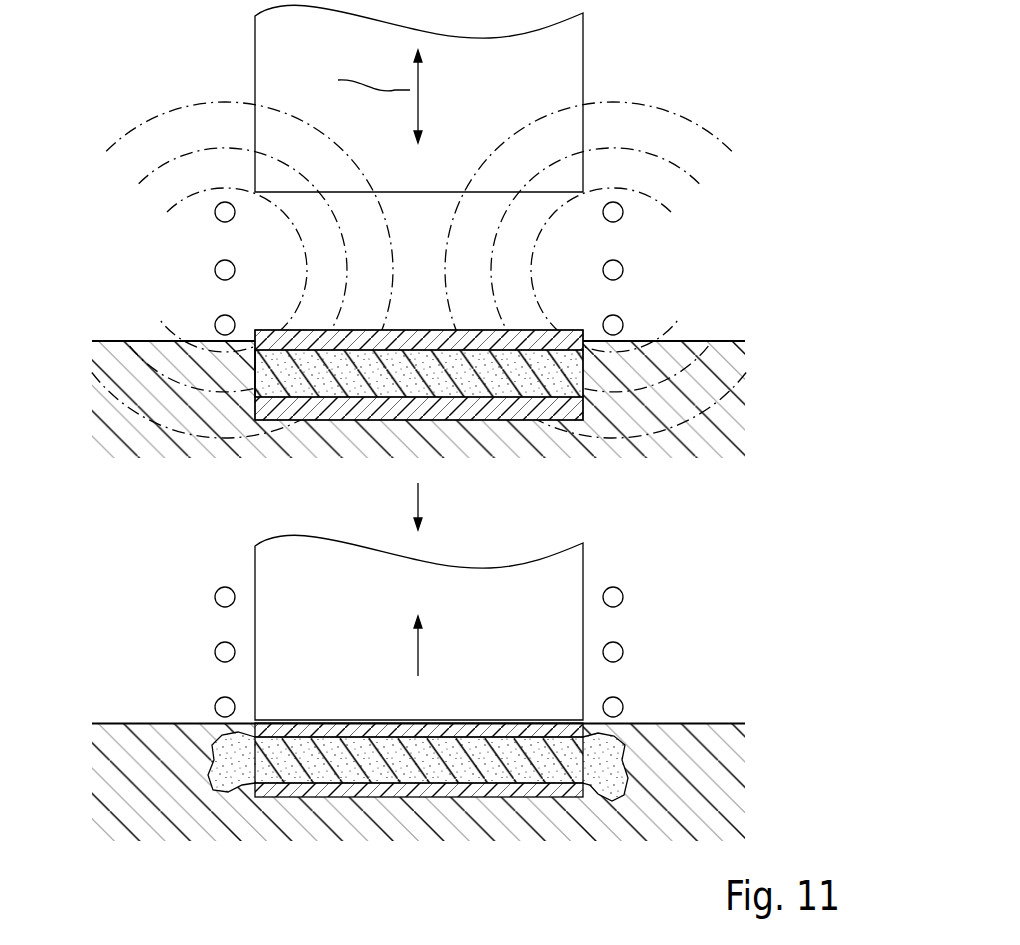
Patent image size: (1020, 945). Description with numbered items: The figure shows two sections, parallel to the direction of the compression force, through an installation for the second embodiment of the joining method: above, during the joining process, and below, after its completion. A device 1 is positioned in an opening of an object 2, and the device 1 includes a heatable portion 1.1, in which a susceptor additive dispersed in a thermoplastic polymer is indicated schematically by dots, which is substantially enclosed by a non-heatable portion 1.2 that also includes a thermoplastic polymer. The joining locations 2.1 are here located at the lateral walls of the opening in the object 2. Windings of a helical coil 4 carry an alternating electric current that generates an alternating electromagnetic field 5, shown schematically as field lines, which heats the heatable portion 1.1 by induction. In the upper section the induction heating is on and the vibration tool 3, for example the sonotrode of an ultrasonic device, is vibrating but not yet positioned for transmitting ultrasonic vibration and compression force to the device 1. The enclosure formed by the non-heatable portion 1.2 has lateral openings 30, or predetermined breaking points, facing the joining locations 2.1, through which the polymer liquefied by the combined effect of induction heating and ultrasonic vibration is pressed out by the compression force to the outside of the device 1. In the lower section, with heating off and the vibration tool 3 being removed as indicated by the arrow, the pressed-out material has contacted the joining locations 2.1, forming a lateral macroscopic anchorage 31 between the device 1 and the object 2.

The device 1 is at (291, 330).
The heatable portion 1.1 is at (585, 372).
The non-heatable portion 1.2 is at (515, 343).
The object 2 is at (483, 456).
The joining location 2.1 is at (586, 363).
The vibration tool 3 is at (481, 94).
The helical coil 4 is at (622, 216).
The alternating electromagnetic field 5 is at (640, 103).
The openings 30 is at (255, 372).
The lateral macroscopic anchorage 31 is at (615, 800).